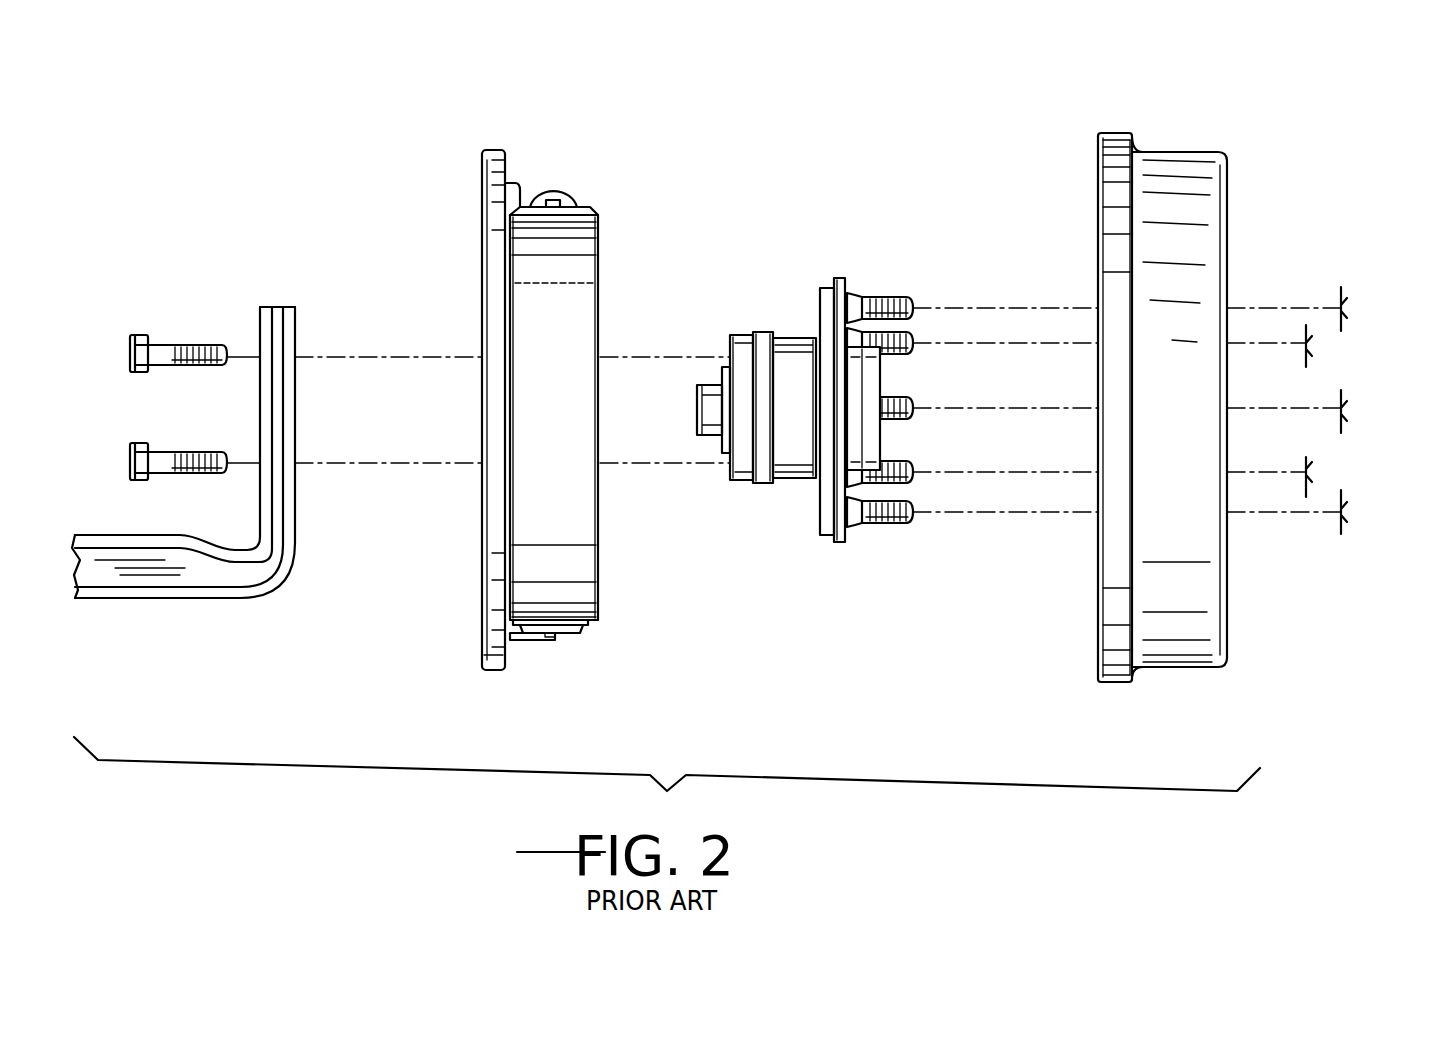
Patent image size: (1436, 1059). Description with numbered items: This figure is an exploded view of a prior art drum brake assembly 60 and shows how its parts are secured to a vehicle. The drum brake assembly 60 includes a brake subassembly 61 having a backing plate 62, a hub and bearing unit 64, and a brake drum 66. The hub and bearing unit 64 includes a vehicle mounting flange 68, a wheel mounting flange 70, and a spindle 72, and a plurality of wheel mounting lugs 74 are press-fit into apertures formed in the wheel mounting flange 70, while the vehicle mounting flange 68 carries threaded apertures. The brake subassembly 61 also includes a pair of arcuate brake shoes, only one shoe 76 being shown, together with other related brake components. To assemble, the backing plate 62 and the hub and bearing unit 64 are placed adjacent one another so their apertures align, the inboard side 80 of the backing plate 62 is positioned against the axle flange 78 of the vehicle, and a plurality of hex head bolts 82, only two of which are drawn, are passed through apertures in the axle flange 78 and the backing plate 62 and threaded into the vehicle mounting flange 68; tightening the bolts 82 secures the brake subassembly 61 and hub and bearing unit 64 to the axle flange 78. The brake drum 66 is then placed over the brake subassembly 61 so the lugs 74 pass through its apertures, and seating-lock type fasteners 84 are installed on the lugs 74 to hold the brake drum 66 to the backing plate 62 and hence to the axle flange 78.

The drum brake assembly 60 is at (842, 346).
The brake subassembly 61 is at (447, 383).
The backing plate 62 is at (490, 672).
The hub and bearing unit 64 is at (793, 494).
The brake drum 66 is at (1172, 668).
The vehicle mounting flange 68 is at (765, 331).
The wheel mounting flange 70 is at (843, 278).
The spindle 72 is at (793, 336).
The wheel mounting lugs 74 is at (900, 297).
The brake shoe 76 is at (598, 575).
The axle flange 78 is at (275, 305).
The inboard side 80 is at (482, 607).
The hex head bolts 82 is at (183, 343).
The seating-lock type fasteners 84 is at (1341, 287).